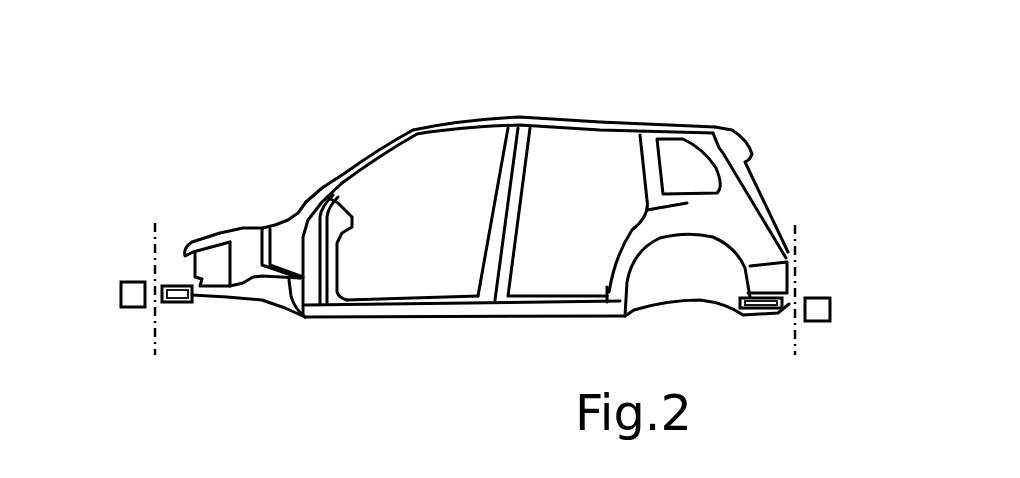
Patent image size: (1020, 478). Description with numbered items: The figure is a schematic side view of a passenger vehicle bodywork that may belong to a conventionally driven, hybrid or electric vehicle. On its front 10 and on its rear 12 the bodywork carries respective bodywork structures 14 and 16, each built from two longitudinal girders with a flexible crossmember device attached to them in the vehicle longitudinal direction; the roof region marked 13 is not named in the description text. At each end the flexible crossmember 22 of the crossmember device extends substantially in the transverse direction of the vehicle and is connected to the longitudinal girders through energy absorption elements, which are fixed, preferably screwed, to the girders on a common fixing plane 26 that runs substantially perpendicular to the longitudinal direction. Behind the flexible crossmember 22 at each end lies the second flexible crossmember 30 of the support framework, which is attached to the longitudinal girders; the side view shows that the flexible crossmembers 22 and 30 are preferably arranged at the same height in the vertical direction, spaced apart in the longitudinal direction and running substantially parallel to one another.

The front 10 is at (487, 180).
The rear 12 is at (755, 114).
The roof 13 is at (607, 117).
The bodywork structure 14 is at (138, 350).
The bodywork structure 16 is at (816, 356).
The flexible crossmember 22 is at (131, 288).
The fixing plane 26 is at (157, 228).
The second flexible crossmember 30 is at (173, 304).